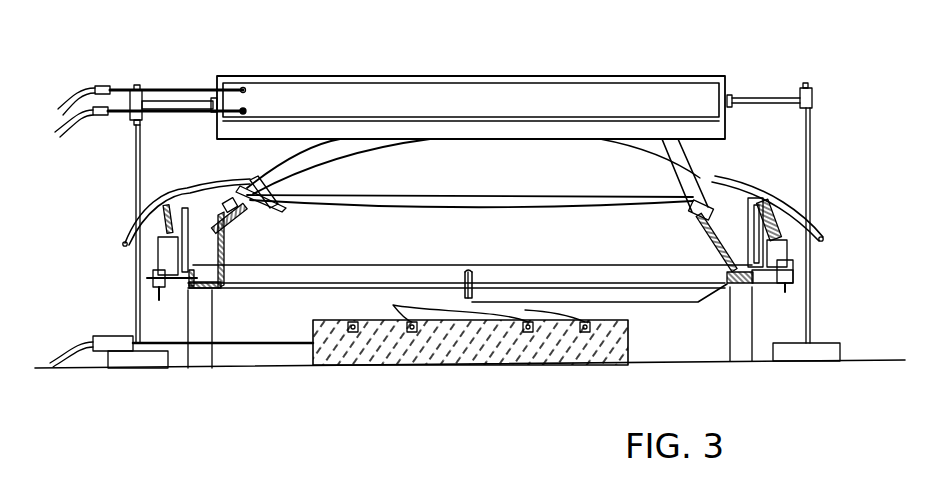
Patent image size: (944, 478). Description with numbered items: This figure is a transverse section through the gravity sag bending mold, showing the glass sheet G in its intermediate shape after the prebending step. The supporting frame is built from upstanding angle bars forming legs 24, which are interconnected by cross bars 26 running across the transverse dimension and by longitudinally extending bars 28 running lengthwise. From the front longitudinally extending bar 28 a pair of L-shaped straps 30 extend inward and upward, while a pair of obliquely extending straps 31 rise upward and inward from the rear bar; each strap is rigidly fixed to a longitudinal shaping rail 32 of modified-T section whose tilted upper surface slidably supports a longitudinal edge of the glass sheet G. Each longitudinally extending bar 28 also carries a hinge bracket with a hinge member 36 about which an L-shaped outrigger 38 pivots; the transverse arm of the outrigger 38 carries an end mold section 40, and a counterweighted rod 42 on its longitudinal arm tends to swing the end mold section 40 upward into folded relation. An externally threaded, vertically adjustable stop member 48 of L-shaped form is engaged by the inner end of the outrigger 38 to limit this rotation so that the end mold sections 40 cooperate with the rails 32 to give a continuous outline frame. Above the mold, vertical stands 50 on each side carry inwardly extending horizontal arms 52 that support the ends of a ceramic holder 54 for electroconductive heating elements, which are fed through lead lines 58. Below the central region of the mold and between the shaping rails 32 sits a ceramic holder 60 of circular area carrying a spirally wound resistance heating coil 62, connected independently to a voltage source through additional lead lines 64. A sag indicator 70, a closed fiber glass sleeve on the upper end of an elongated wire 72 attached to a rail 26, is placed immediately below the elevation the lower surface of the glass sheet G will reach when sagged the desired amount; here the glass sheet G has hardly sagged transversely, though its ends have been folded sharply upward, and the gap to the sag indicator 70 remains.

The legs 24 is at (214, 332).
The cross bars 26 is at (275, 293).
The longitudinally extending bars 28 is at (760, 287).
The L-shaped straps 30 is at (226, 250).
The obliquely extending straps 31 is at (704, 234).
The longitudinal shaping rail 32 is at (214, 190).
The hinge member 36 is at (216, 238).
The L-shaped outrigger 38 is at (790, 250).
The end mold section 40 is at (272, 160).
The rod 42 is at (815, 224).
The stop member 48 is at (807, 272).
The vertical stands 50 is at (810, 158).
The horizontal arms 52 is at (742, 100).
The ceramic holder 54 is at (514, 72).
The lead lines 58 is at (68, 106).
The ceramic holder 60 is at (626, 347).
The spirally wound resistance heating coil 62 is at (350, 322).
The additional lead lines 64 is at (56, 352).
The sag indicator 70 is at (478, 272).
The elongated wire 72 is at (598, 300).
The glass sheet G is at (475, 198).